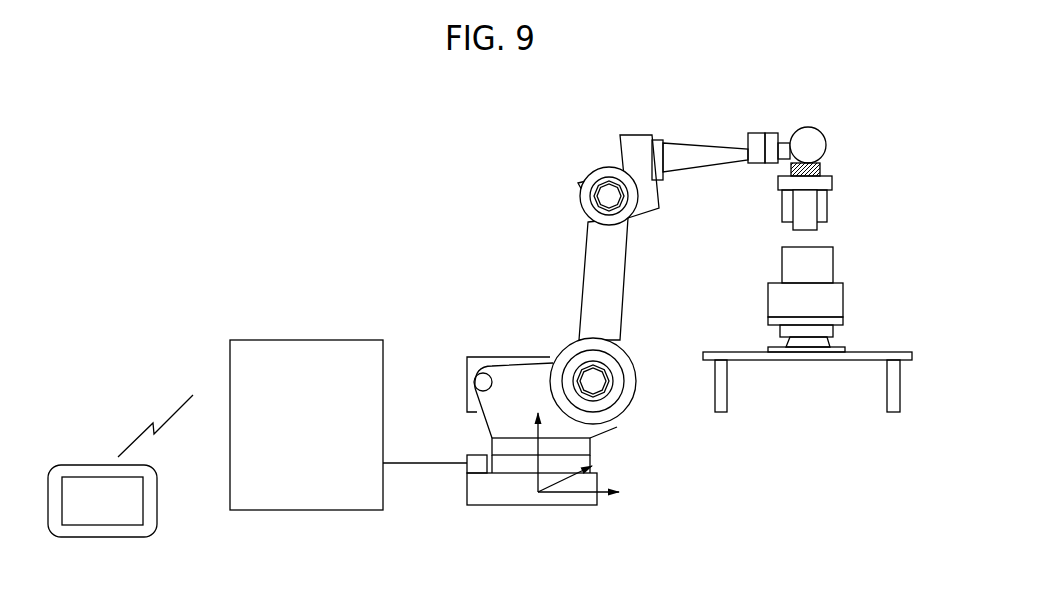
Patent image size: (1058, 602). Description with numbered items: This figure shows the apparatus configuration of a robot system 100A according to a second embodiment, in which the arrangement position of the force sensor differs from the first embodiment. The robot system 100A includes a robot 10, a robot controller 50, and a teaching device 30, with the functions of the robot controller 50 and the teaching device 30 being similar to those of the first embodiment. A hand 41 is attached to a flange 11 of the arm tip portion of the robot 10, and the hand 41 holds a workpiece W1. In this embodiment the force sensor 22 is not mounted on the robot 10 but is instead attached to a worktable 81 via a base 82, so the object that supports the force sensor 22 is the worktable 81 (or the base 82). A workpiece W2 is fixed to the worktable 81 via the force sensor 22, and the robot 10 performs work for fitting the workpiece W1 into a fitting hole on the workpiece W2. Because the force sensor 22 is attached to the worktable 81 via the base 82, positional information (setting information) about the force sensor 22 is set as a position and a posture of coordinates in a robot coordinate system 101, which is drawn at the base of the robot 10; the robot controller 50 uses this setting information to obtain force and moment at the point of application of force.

The robot system 100A is at (386, 169).
The robot 10 is at (583, 271).
The robot coordinate system 101 is at (603, 513).
The robot controller 50 is at (305, 340).
The teaching device 30 is at (88, 463).
The flange 11 is at (823, 173).
The hand 41 is at (828, 207).
The workpiece W1 is at (828, 227).
The workpiece W2 is at (834, 267).
The force sensor 22 is at (846, 300).
The base 82 is at (836, 330).
The worktable 81 is at (912, 360).